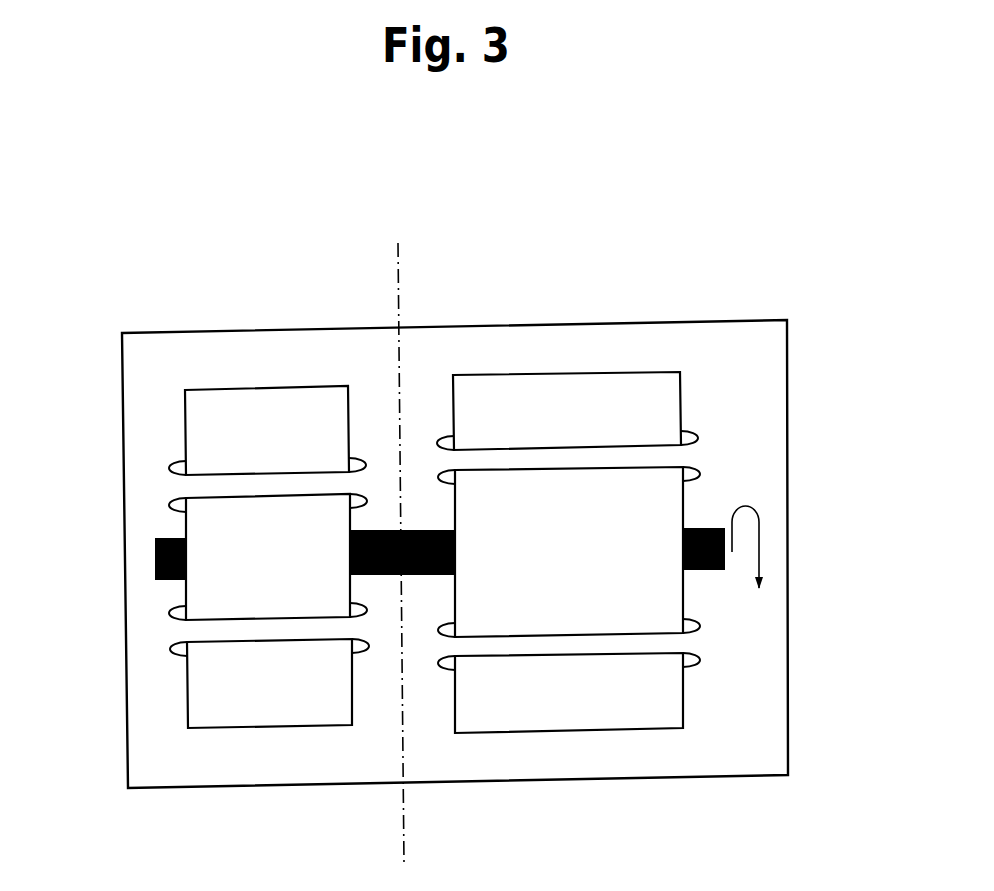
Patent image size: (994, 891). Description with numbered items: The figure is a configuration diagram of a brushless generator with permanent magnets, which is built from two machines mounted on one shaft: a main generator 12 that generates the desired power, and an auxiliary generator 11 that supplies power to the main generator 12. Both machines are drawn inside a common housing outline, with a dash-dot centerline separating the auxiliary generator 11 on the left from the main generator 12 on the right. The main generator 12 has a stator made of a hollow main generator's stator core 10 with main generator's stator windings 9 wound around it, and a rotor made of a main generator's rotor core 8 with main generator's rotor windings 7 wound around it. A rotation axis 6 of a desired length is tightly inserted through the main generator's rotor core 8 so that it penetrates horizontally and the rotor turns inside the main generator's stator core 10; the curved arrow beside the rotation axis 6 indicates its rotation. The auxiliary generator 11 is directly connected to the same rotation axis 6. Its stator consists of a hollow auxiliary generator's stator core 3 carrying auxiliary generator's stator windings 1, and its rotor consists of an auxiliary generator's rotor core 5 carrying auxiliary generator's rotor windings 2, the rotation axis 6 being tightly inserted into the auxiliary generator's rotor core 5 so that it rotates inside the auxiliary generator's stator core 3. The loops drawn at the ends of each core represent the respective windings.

The auxiliary generator's stator windings 1 is at (166, 470).
The auxiliary generator's rotor windings 2 is at (168, 614).
The auxiliary generator's stator core 3 is at (212, 436).
The auxiliary generator's rotor core 5 is at (194, 589).
The rotation axis 6 is at (726, 547).
The main generator's rotor windings 7 is at (702, 475).
The main generator's rotor core 8 is at (650, 606).
The main generator's stator windings 9 is at (708, 655).
The main generator's stator core 10 is at (620, 716).
The auxiliary generator 11 is at (248, 808).
The main generator 12 is at (603, 802).